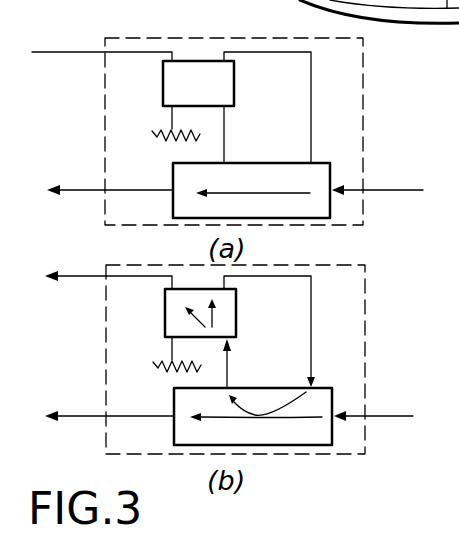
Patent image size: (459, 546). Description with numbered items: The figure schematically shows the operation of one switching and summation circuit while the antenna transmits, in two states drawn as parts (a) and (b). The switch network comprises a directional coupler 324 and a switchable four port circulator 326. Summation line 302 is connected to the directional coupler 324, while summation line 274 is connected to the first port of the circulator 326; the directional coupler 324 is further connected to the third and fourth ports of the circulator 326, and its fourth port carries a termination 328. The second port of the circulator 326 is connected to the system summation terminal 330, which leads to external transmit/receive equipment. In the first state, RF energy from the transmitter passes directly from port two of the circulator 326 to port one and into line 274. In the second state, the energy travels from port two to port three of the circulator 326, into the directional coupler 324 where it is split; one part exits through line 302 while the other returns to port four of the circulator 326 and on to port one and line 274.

The summation line 302 is at (69, 52).
The summation line 274 is at (86, 190).
The directional coupler 324 is at (234, 88).
The switchable four port circulator 326 is at (261, 172).
The termination 328 is at (163, 140).
The system summation terminal 330 is at (386, 190).